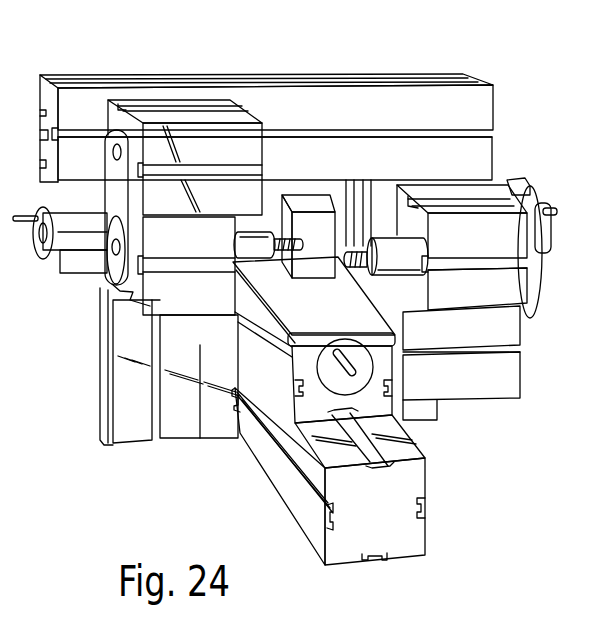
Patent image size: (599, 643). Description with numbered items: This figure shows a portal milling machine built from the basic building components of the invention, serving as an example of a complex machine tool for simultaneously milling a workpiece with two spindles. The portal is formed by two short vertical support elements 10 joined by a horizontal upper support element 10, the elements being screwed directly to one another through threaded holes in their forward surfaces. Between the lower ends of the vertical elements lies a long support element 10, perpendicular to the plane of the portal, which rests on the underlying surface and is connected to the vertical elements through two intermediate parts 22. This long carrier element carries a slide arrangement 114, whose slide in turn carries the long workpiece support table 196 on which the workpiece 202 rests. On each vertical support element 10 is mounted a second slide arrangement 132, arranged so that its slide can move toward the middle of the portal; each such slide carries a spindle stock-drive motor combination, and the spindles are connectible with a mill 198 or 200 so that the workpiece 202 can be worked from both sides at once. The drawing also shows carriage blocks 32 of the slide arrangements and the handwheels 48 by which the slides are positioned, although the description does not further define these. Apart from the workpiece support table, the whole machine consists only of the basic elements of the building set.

The support element 10 is at (420, 73).
The intermediate part 22 is at (219, 428).
The carriage block 32 is at (198, 103).
The handwheel / pulley 48 is at (152, 305).
The slide arrangement 114 is at (312, 412).
The second slide arrangement 132 is at (52, 278).
The workpiece support table 196 is at (306, 309).
The mill 198 is at (268, 228).
The mill 200 is at (350, 262).
The workpiece 202 is at (336, 239).